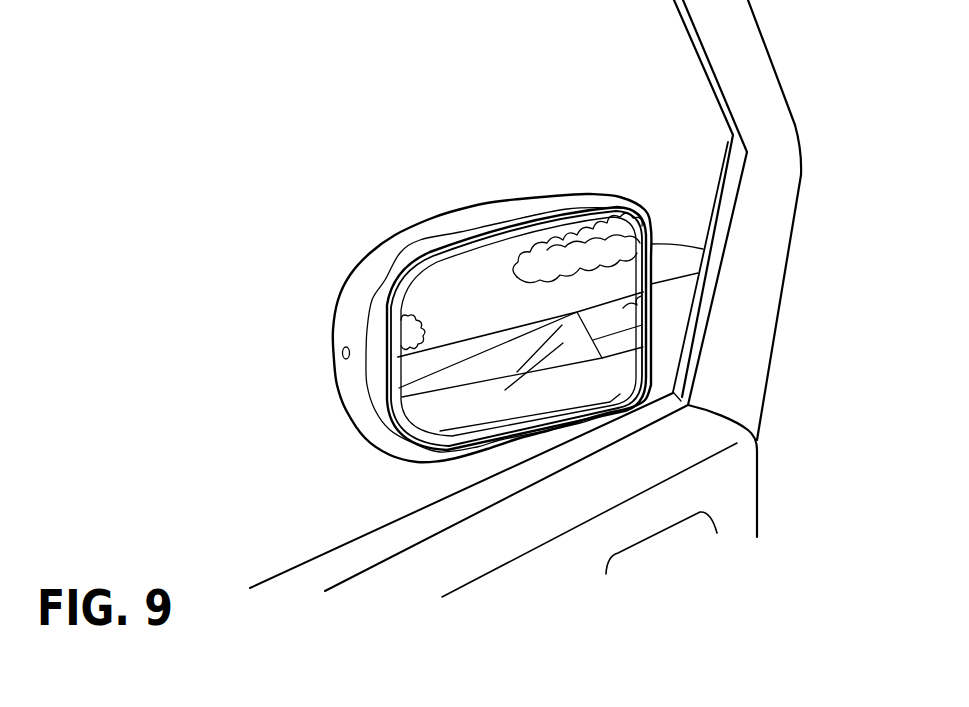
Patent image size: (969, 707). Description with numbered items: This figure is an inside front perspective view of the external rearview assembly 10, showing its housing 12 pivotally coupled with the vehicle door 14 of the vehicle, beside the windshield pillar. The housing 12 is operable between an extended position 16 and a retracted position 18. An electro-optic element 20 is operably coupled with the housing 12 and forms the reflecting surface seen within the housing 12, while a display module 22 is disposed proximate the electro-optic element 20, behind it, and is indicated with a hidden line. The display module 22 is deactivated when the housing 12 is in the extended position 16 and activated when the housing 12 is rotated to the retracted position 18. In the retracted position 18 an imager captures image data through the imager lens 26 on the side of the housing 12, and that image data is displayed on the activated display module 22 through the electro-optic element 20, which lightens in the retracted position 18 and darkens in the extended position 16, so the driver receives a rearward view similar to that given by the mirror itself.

The external rearview assembly 10 is at (417, 272).
The housing 12 is at (377, 266).
The vehicle door 14 is at (569, 600).
The extended position 16 is at (762, 78).
The retracted position 18 is at (566, 192).
The electro-optic element 20 is at (512, 303).
The display module 22 is at (448, 325).
The imager lens 26 is at (342, 353).